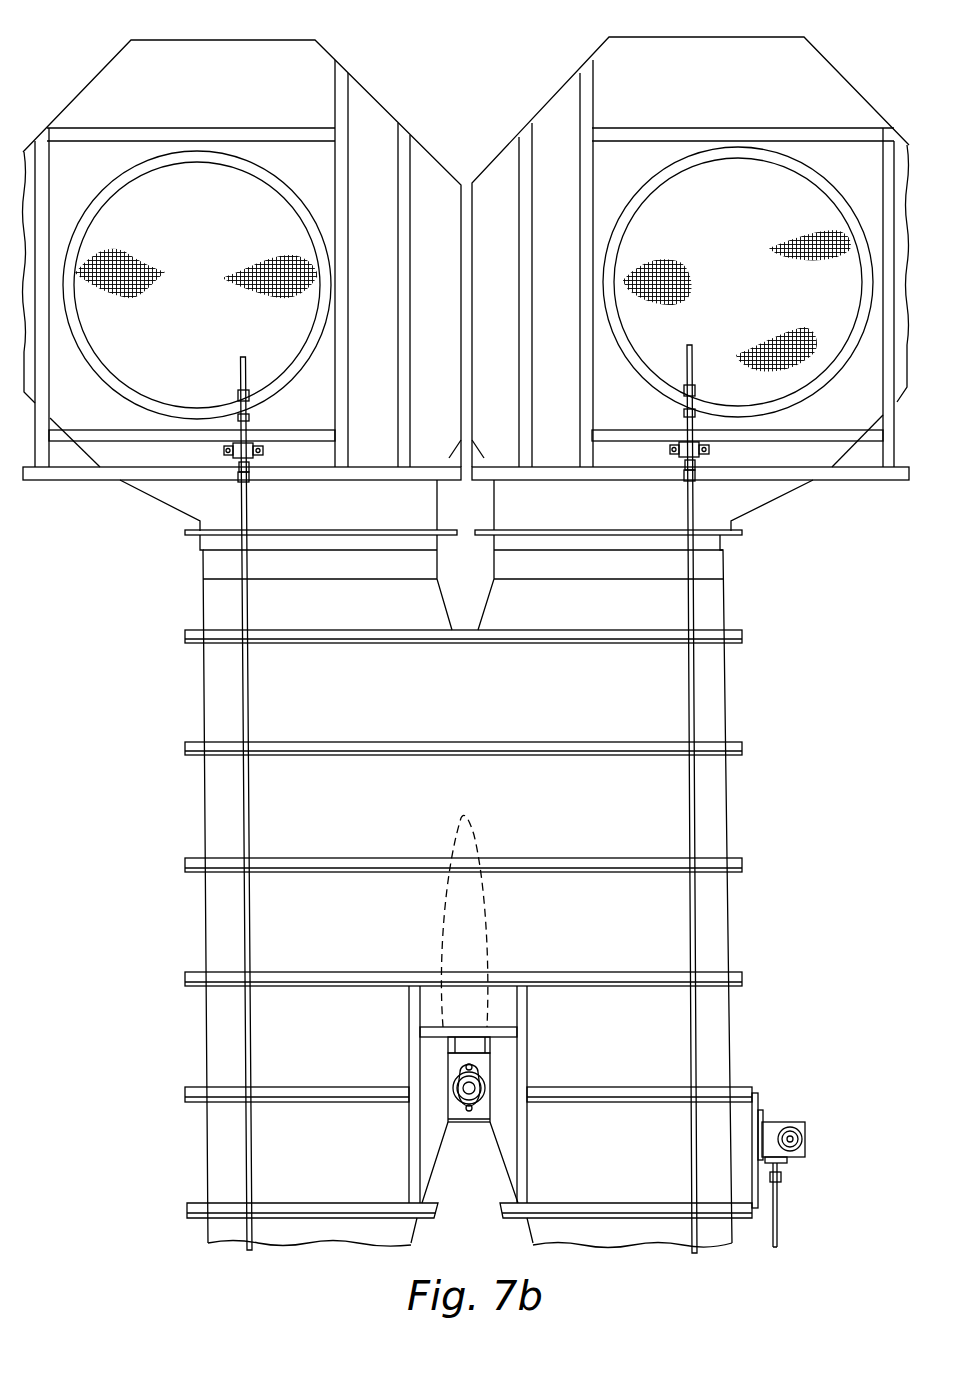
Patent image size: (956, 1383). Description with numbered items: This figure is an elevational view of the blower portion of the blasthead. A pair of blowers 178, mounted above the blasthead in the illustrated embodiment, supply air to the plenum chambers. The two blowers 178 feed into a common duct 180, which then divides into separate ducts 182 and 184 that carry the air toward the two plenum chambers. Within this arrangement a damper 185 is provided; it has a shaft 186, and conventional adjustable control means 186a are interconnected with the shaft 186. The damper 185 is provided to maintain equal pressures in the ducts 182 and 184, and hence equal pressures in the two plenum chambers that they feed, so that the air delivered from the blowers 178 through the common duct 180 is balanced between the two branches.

The blower 178 is at (322, 22).
The common duct 180 is at (207, 1032).
The duct 182 is at (212, 1232).
The duct 184 is at (705, 1235).
The damper 185 is at (470, 828).
The shaft 186 is at (471, 1112).
The adjustable control means 186a is at (780, 1230).